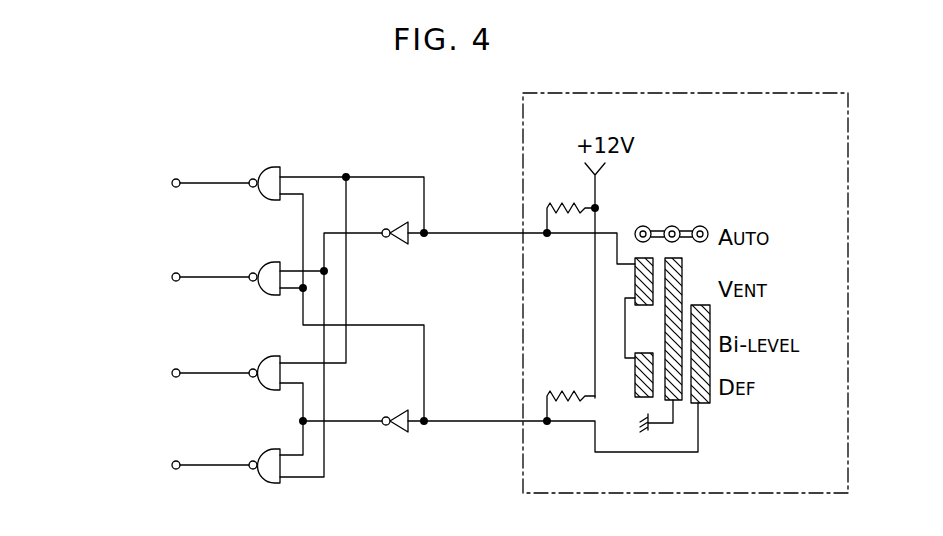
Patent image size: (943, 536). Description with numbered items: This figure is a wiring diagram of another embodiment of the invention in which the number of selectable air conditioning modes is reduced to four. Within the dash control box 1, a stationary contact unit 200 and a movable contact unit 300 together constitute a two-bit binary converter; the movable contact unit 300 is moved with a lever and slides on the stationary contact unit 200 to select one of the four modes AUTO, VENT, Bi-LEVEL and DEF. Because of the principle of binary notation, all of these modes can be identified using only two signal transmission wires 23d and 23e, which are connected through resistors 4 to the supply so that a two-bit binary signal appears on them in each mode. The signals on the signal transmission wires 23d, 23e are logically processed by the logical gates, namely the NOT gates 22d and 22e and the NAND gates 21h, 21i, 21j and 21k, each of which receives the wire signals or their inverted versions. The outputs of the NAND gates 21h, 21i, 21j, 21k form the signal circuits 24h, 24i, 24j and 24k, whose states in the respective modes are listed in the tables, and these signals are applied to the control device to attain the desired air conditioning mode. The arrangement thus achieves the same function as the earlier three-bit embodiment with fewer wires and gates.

The dash control box 1 is at (522, 441).
The resistors 4 is at (564, 204).
The NAND gate 21h is at (266, 166).
The NAND gate 21i is at (264, 261).
The NAND gate 21j is at (264, 355).
The NAND gate 21k is at (264, 449).
The NOT gate 22d is at (401, 221).
The NOT gate 22e is at (401, 410).
The signal transmission wire 23d is at (461, 233).
The signal transmission wire 23e is at (460, 420).
The signal circuit 24h is at (213, 181).
The signal circuit 24i is at (208, 275).
The signal circuit 24j is at (204, 371).
The signal circuit 24k is at (213, 463).
The stationary contact unit 200 is at (664, 401).
The movable contact unit 300 is at (645, 226).